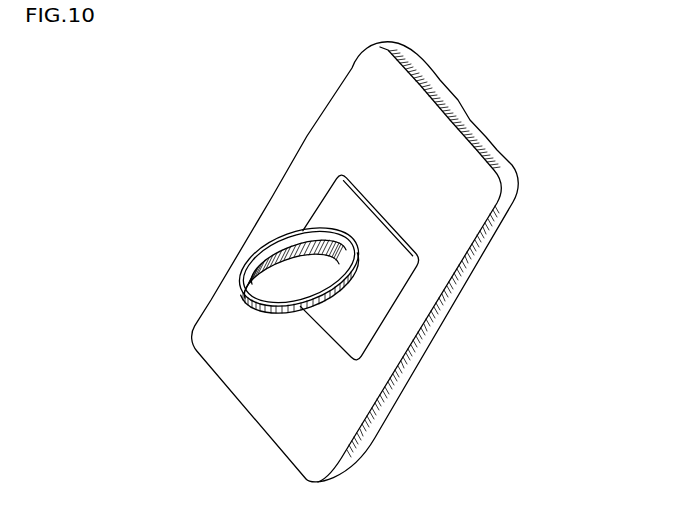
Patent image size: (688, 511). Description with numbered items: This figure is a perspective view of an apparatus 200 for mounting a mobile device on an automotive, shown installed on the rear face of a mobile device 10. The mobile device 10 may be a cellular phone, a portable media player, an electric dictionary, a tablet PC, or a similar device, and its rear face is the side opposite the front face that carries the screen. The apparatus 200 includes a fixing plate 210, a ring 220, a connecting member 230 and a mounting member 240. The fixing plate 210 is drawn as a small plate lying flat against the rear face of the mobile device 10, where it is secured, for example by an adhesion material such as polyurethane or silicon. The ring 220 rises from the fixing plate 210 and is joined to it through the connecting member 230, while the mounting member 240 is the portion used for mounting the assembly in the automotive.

The mobile device 10 is at (482, 190).
The apparatus for mounting a mobile device on an automotive 200 is at (330, 249).
The fixing plate 210 is at (382, 306).
The ring 220 is at (285, 236).
The connecting member 230 is at (357, 278).
The mounting member 240 is at (263, 284).